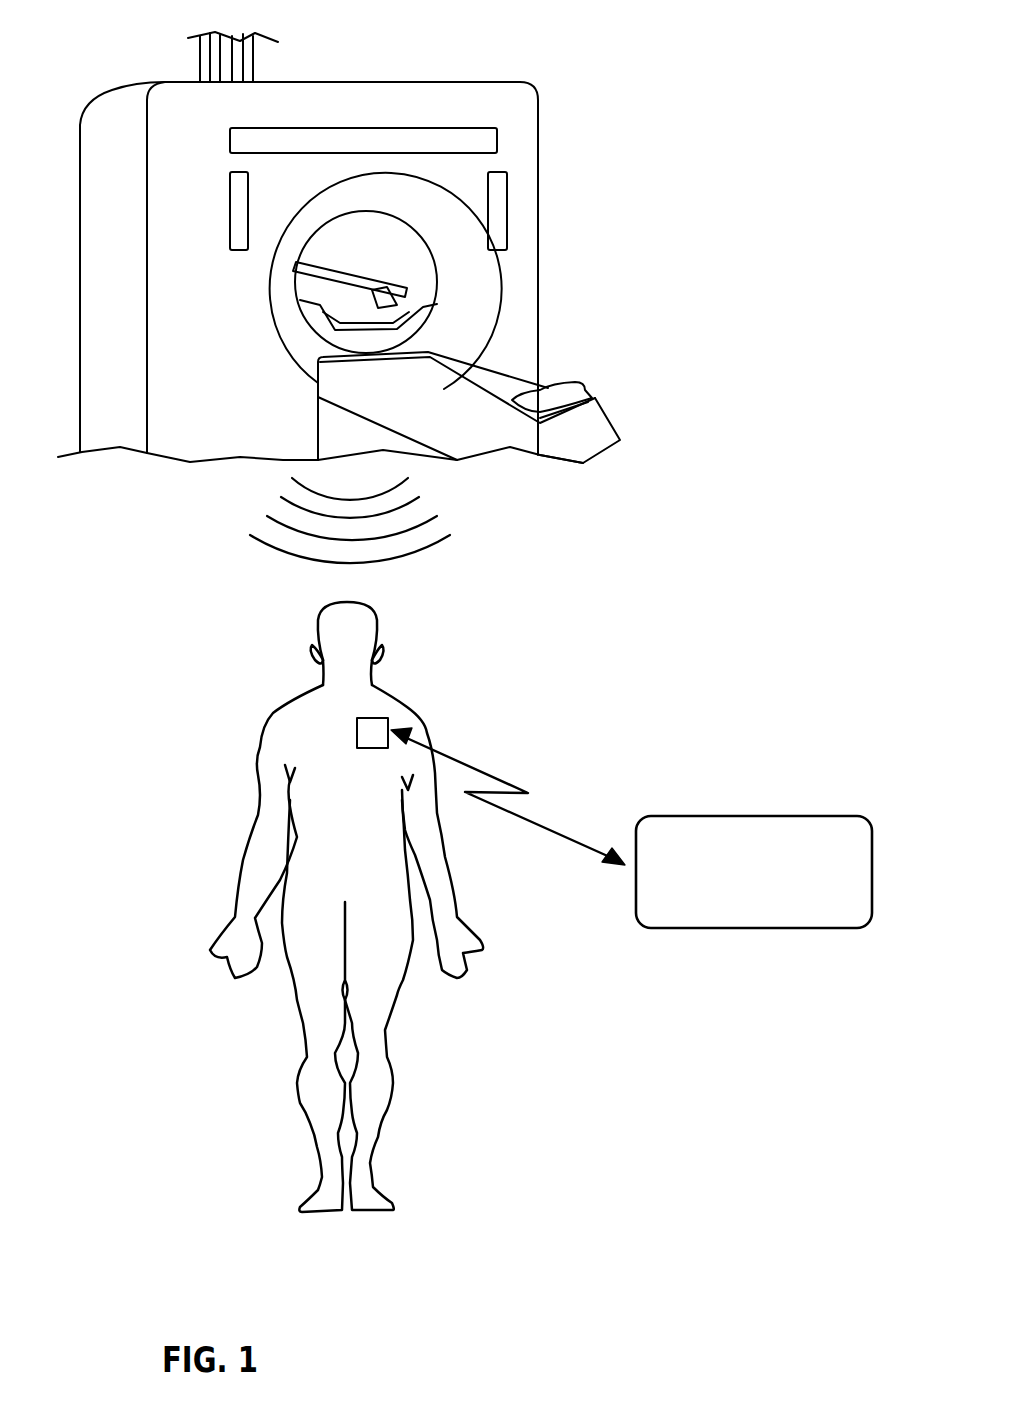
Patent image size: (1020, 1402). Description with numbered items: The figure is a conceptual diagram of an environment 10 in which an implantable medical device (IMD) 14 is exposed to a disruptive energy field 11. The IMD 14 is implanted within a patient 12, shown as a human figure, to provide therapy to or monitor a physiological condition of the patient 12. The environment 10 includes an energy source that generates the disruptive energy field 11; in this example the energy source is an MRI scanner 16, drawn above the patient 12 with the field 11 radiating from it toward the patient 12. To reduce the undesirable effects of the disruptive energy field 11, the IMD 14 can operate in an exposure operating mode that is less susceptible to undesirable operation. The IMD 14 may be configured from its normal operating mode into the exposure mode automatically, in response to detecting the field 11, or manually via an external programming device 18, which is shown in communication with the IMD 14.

The environment 10 is at (843, 74).
The disruptive energy field 11 is at (460, 508).
The patient 12 is at (327, 907).
The implantable medical device 14 is at (378, 737).
The MRI scanner 16 is at (545, 256).
The external programming device 18 is at (631, 828).